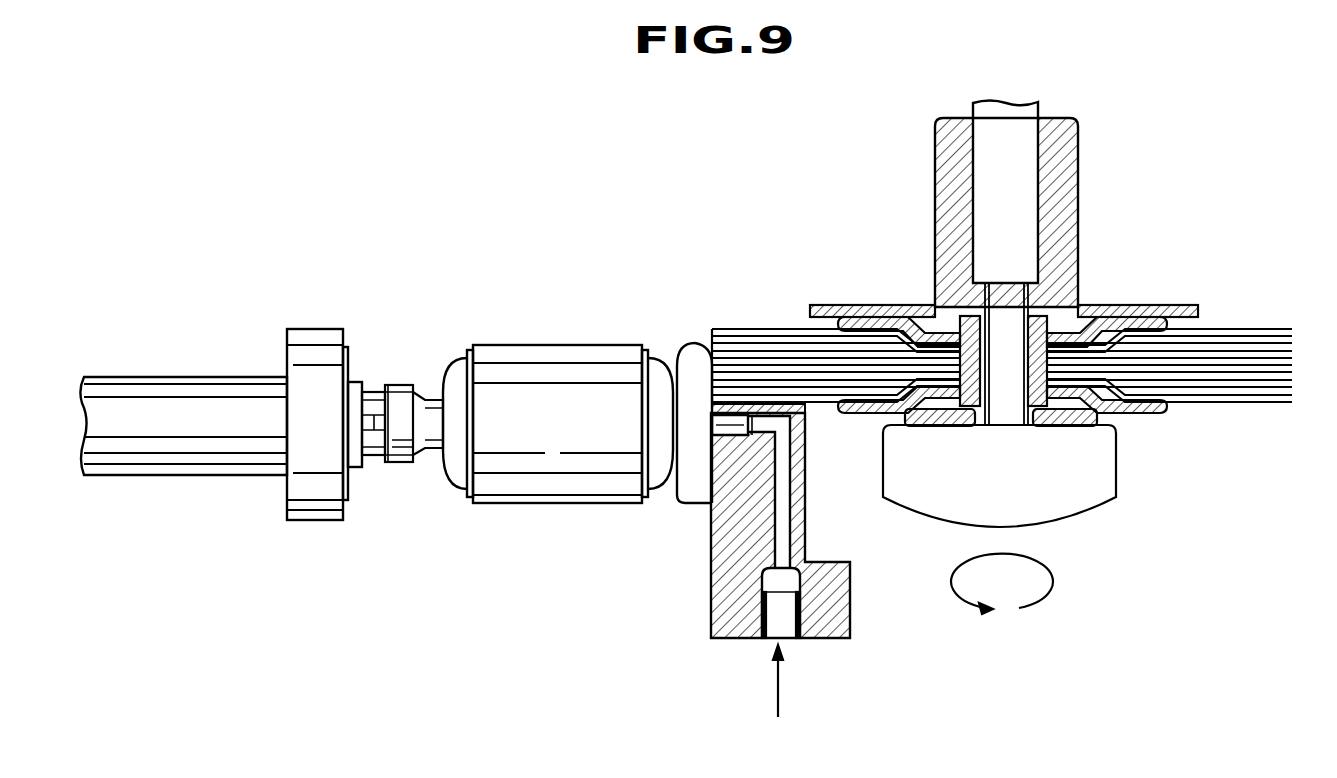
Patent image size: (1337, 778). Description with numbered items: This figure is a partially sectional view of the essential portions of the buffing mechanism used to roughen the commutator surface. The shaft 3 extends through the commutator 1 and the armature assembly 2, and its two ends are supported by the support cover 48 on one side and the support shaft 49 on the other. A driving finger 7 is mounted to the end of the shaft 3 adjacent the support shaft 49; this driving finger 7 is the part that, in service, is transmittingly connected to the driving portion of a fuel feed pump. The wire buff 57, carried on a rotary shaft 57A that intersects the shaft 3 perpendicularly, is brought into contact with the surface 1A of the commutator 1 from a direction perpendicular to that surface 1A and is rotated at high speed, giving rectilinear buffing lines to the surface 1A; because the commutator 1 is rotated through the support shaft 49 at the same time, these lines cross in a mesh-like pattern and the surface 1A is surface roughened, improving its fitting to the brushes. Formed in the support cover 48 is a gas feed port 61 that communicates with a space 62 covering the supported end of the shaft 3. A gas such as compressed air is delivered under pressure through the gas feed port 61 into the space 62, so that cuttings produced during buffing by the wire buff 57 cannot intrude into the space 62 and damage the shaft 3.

The support shaft 49 is at (184, 384).
The driving finger 7 is at (397, 463).
The armature assembly 2 is at (540, 504).
The commutator 1 is at (669, 418).
The surface of the commutator 1A is at (692, 347).
The shaft 3 is at (711, 440).
The space 62 is at (733, 404).
The wire buff 57 is at (779, 328).
The rotary shaft of the wire buff 57A is at (1033, 205).
The support cover 48 is at (735, 640).
The gas feed port 61 is at (783, 630).